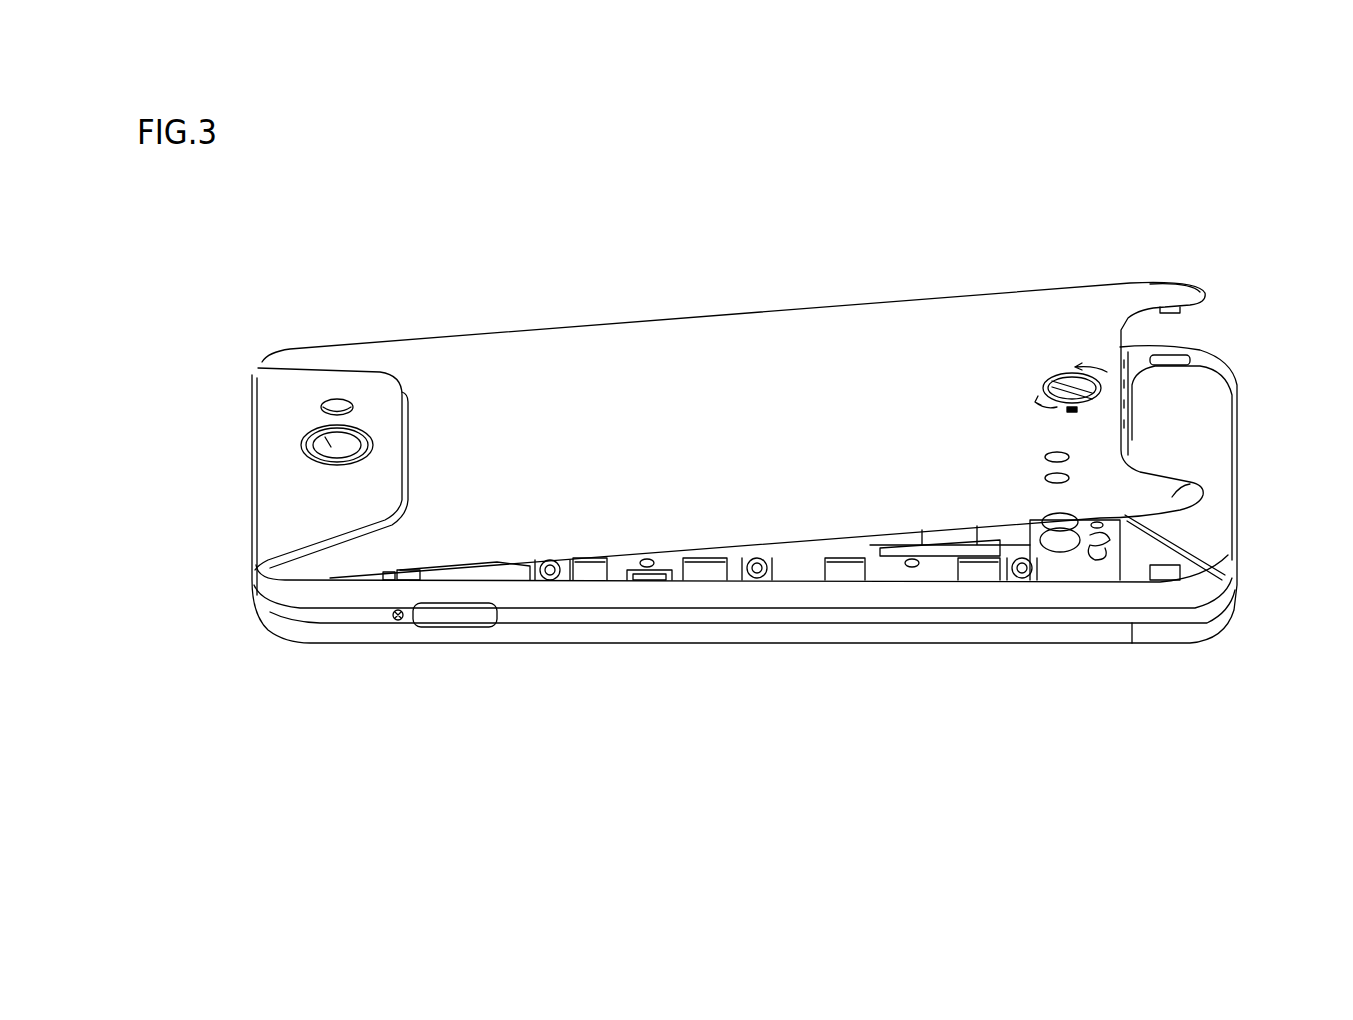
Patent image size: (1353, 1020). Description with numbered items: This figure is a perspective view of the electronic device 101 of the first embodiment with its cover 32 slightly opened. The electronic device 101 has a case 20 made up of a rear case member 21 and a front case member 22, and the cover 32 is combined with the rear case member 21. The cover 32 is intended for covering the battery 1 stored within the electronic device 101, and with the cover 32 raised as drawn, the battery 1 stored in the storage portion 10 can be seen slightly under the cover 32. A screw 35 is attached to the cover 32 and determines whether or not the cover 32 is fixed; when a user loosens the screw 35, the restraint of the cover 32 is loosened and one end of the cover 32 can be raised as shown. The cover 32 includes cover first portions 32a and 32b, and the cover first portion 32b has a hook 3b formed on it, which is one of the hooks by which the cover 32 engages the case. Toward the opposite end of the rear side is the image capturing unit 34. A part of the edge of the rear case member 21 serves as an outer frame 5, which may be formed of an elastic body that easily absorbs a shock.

The electronic device 101 is at (397, 312).
The cover 32 is at (740, 352).
The cover first portion 32a is at (1215, 493).
The cover first portion 32b is at (1168, 295).
The hook 3b is at (1176, 312).
The image capturing unit 34 is at (310, 430).
The screw 35 is at (1072, 375).
The outer frame 5 is at (647, 590).
The battery 1 is at (905, 537).
The storage portion 10 is at (948, 545).
The case 20 is at (1223, 690).
The rear case member 21 is at (1175, 592).
The front case member 22 is at (1150, 633).